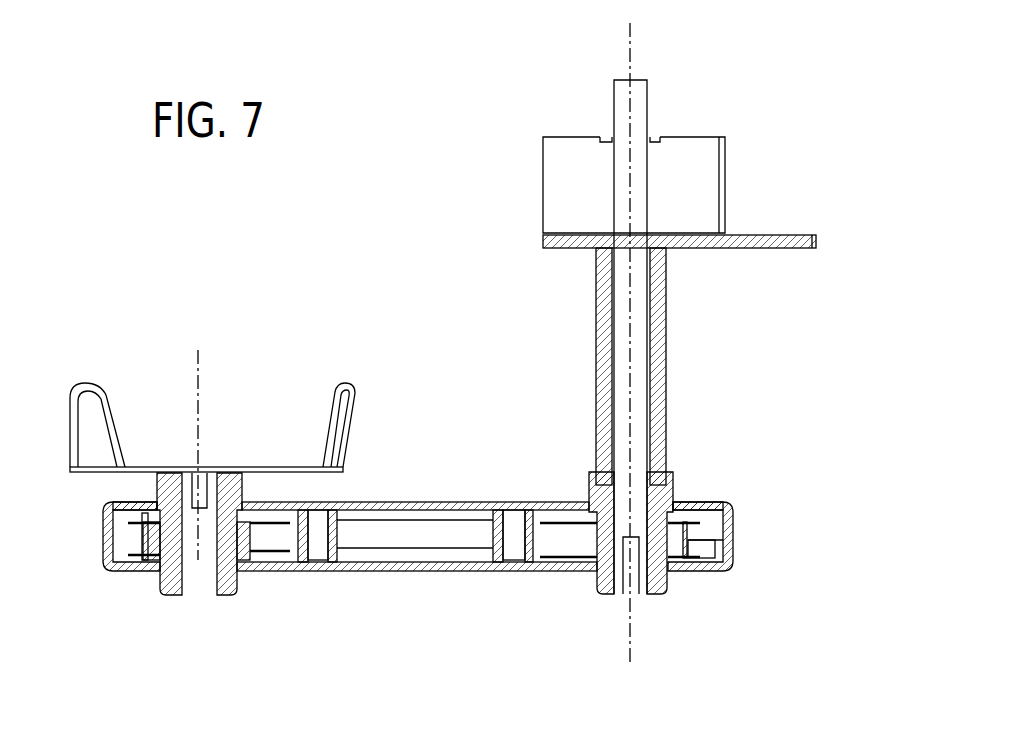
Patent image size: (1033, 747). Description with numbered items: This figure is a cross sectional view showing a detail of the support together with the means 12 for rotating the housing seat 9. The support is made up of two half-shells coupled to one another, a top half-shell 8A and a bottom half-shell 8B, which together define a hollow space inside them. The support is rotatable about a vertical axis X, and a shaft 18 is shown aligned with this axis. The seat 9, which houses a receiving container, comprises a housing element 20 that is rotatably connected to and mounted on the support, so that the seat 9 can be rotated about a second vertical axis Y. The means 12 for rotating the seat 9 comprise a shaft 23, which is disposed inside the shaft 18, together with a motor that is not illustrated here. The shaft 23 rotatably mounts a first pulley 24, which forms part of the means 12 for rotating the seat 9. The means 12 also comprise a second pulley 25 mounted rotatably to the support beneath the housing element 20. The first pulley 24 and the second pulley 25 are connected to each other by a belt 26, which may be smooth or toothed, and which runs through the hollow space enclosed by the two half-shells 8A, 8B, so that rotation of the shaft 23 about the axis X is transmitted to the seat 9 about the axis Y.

The top half-shell 8A is at (447, 497).
The bottom half-shell 8B is at (364, 576).
The housing seat 9 is at (212, 377).
The housing element 20 is at (152, 388).
The means for rotating the housing seat 12 is at (441, 580).
The shaft 18 is at (670, 325).
The shaft 23 is at (617, 597).
The first pulley 24 is at (688, 550).
The second pulley 25 is at (160, 588).
The belt 26 is at (438, 540).
The vertical axis X is at (630, 52).
The vertical axis Y is at (214, 408).